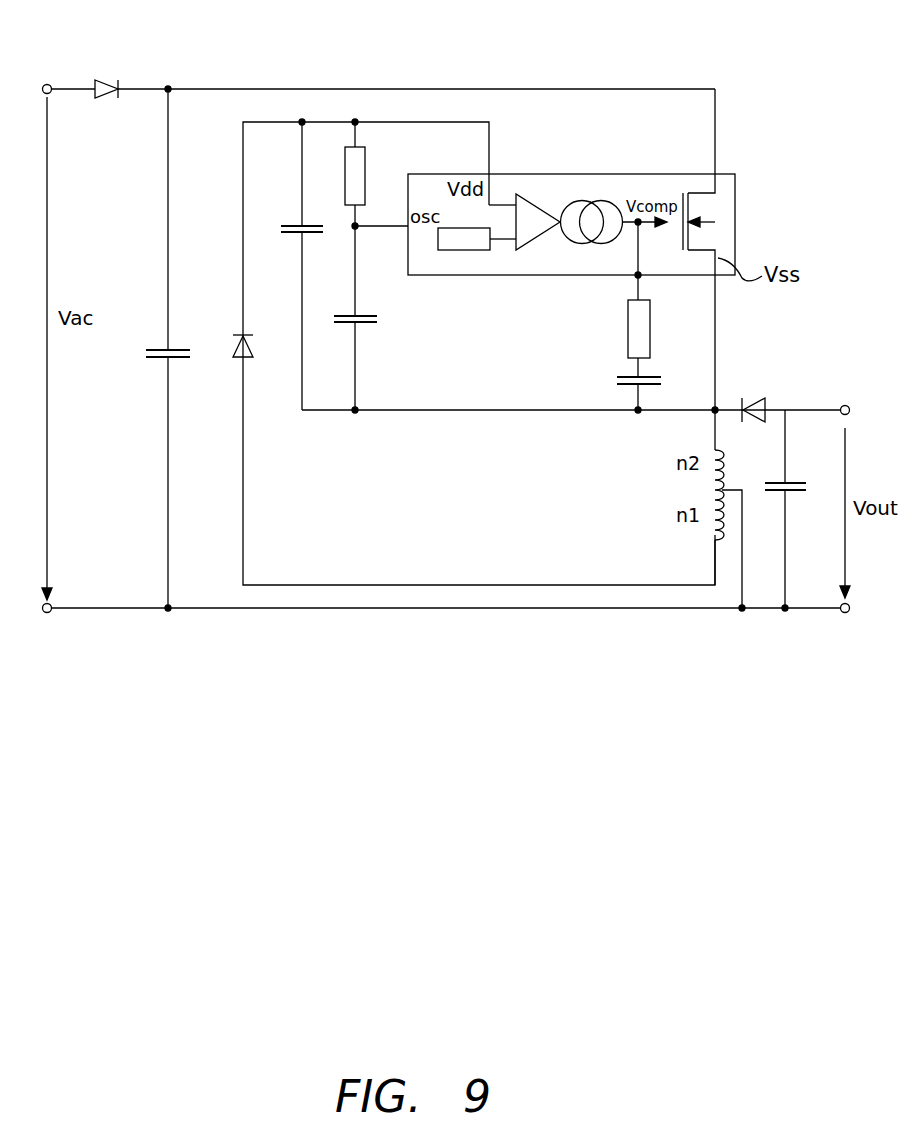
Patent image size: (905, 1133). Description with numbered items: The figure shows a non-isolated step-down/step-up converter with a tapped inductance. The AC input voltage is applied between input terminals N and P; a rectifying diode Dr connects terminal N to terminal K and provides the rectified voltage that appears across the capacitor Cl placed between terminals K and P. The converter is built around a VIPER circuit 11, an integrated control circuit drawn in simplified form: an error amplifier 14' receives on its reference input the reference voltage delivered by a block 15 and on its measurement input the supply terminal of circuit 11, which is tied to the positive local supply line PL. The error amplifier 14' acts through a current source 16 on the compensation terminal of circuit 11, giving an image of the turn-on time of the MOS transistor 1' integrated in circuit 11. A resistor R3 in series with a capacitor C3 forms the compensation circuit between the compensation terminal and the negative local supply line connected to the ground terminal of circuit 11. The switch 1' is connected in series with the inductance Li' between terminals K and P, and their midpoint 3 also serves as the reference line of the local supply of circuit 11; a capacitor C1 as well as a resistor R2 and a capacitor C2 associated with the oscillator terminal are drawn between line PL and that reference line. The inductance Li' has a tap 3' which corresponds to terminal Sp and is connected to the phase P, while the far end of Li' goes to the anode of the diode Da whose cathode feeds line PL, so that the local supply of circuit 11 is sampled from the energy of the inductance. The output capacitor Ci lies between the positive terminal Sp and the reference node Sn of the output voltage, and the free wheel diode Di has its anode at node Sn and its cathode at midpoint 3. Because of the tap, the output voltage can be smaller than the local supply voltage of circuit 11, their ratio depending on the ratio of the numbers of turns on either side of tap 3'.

The VIPER circuit 11 is at (630, 174).
The error amplifier 14' is at (548, 192).
The block 15 is at (465, 250).
The current source 16 is at (578, 243).
The MOS transistor 1' is at (730, 224).
The midpoint 3 is at (727, 384).
The tap 3' is at (738, 523).
The inductance Li' is at (667, 517).
The rectifying diode Dr is at (103, 74).
The capacitor Cl is at (162, 350).
The diode Da is at (257, 361).
The capacitor C1 is at (292, 264).
The resistor R2 is at (371, 174).
The oscillator capacitor C2 is at (363, 319).
The resistor R3 is at (656, 338).
The capacitor C3 is at (623, 392).
The free wheel diode Di is at (791, 396).
The capacitor Ci is at (791, 510).
The positive local supply line PL is at (432, 122).
The AC input terminal N is at (47, 80).
The phase P is at (42, 608).
The terminal K is at (168, 80).
The reference node Sn is at (841, 404).
The positive terminal Sp is at (840, 614).